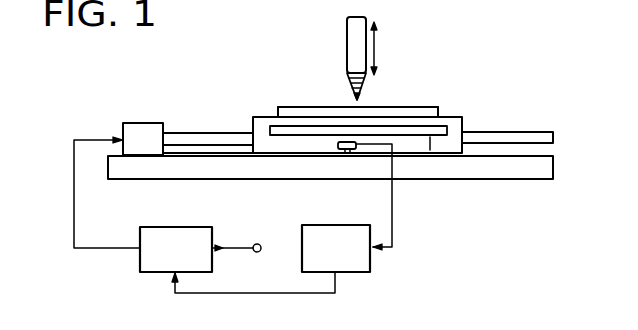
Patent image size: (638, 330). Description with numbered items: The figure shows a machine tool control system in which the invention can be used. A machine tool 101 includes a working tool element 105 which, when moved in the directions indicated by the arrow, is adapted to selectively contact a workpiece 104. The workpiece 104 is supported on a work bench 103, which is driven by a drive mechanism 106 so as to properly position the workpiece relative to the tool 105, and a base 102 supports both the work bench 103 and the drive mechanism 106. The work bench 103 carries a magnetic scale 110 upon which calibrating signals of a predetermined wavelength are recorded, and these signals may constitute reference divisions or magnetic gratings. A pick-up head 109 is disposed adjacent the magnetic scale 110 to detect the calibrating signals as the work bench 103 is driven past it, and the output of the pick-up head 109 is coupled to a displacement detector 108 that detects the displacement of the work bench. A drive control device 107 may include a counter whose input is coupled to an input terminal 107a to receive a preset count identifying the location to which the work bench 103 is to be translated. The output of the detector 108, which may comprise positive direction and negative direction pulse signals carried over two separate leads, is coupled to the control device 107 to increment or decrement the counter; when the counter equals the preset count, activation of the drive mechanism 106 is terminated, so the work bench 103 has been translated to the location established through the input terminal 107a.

The machine tool 101 is at (377, 108).
The base 102 is at (498, 170).
The work bench 103 is at (463, 120).
The workpiece 104 is at (433, 110).
The working tool element 105 is at (347, 53).
The drive mechanism 106 is at (130, 128).
The drive control device 107 is at (152, 234).
The input terminal 107a is at (254, 252).
The displacement detector 108 is at (380, 213).
The pick-up head 109 is at (336, 147).
The magnetic scale 110 is at (430, 138).